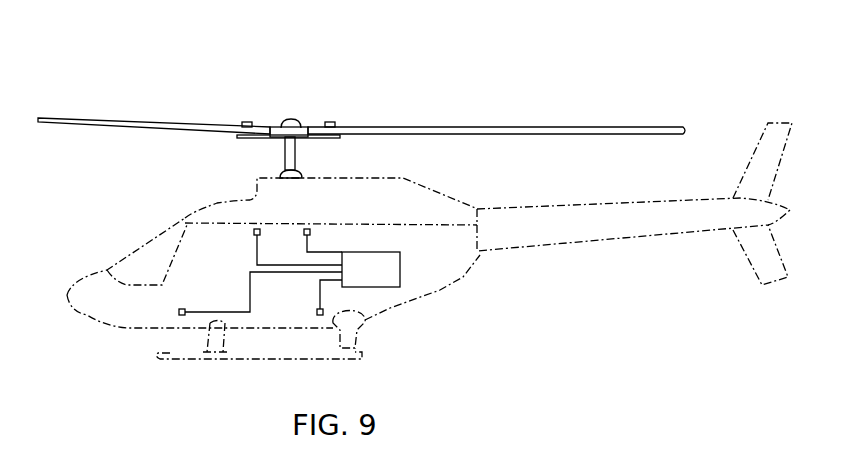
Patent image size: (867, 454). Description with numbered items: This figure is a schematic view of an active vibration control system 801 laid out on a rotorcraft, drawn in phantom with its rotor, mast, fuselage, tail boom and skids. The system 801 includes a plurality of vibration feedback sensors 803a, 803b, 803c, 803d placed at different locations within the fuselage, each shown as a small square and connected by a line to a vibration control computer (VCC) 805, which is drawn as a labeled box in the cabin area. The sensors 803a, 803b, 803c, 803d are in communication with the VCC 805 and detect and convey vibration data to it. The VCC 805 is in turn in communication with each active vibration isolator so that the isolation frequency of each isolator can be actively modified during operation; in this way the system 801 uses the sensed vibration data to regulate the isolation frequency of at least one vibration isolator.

The active vibration control system 801 is at (190, 70).
The vibration feedback sensor 803a is at (178, 310).
The vibration feedback sensor 803b is at (254, 233).
The vibration feedback sensor 803c is at (317, 310).
The vibration feedback sensor 803d is at (308, 228).
The vibration control computer (VCC) 805 is at (400, 270).